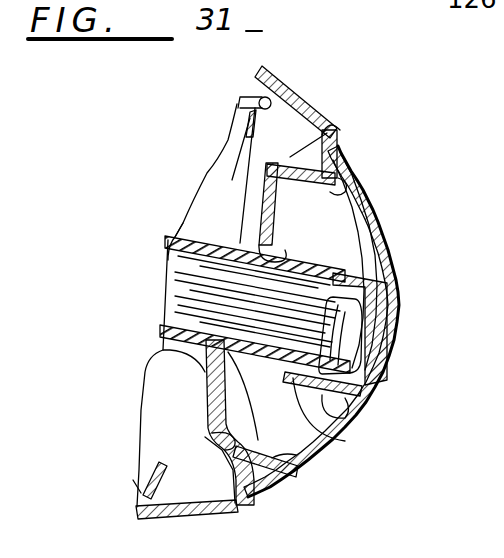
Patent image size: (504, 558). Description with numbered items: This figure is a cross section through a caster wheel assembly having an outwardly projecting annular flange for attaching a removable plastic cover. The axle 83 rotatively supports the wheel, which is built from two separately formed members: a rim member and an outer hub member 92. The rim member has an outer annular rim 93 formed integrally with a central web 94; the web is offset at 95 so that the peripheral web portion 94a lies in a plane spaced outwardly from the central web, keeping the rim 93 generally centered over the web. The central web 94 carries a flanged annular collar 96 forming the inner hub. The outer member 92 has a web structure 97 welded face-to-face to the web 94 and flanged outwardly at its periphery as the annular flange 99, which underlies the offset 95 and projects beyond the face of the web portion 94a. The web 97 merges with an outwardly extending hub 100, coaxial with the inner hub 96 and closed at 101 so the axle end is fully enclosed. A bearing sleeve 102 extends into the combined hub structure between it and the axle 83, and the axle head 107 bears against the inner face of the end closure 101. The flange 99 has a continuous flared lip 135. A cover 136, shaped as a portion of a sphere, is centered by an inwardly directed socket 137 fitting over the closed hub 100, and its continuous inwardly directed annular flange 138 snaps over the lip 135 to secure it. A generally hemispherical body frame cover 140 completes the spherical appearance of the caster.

The axle 83 is at (178, 294).
The outer hub member 92 is at (290, 256).
The outer annular rim 93 is at (320, 114).
The central web 94 is at (248, 218).
The web portion 94a is at (332, 153).
The offset 95 is at (338, 134).
The flanged annular collar 96 is at (158, 370).
The web structure 97 is at (252, 418).
The outwardly extending annular flange 99 is at (271, 163).
The outwardly extending hub 100 is at (336, 449).
The end closure 101 is at (348, 347).
The bearing sleeve 102 is at (172, 247).
The axle head 107 is at (378, 371).
The flared lip 135 is at (360, 206).
The cover 136 is at (394, 303).
The inwardly directed socket 137 is at (352, 420).
The inwardly directed annular flange 138 is at (347, 184).
The body frame cover 140 is at (250, 94).